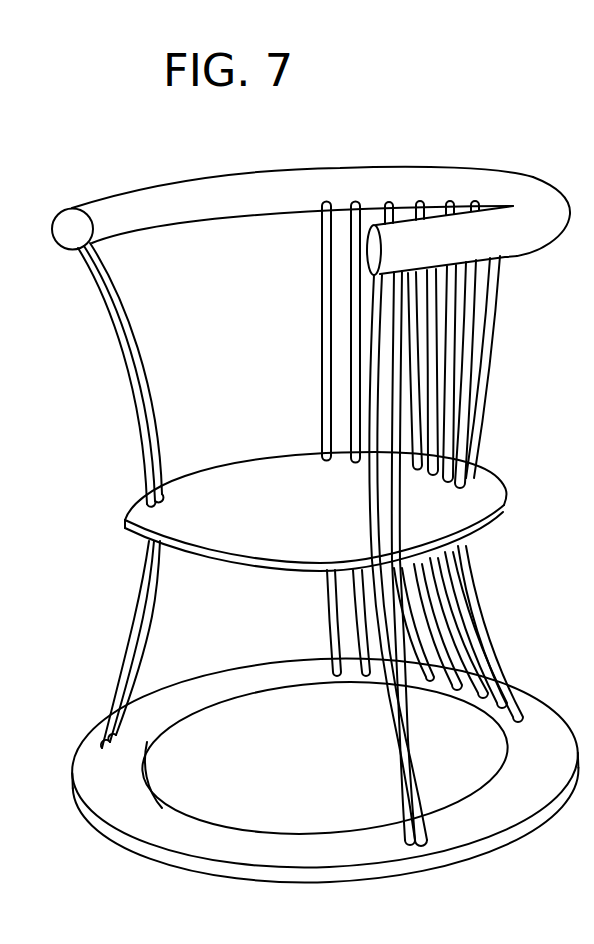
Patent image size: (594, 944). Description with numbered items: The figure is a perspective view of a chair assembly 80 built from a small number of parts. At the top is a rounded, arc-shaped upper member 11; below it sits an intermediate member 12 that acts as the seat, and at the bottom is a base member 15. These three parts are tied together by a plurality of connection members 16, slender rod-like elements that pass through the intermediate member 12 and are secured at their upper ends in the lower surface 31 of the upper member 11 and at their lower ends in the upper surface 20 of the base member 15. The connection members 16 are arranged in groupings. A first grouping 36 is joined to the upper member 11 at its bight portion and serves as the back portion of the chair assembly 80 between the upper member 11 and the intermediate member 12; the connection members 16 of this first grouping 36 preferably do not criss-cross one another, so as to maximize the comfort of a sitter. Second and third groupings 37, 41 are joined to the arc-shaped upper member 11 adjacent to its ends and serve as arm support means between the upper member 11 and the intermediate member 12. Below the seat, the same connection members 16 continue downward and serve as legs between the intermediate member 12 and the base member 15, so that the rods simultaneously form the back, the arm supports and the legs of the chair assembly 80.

The upper member 11 is at (543, 180).
The intermediate member 12 is at (490, 477).
The base member 15 is at (557, 710).
The connection members 16 is at (477, 352).
The upper surface 20 is at (150, 802).
The lower surface 31 is at (203, 218).
The first grouping 36 is at (497, 292).
The second grouping 37 is at (385, 752).
The third grouping 41 is at (147, 368).
The chair assembly 80 is at (414, 158).